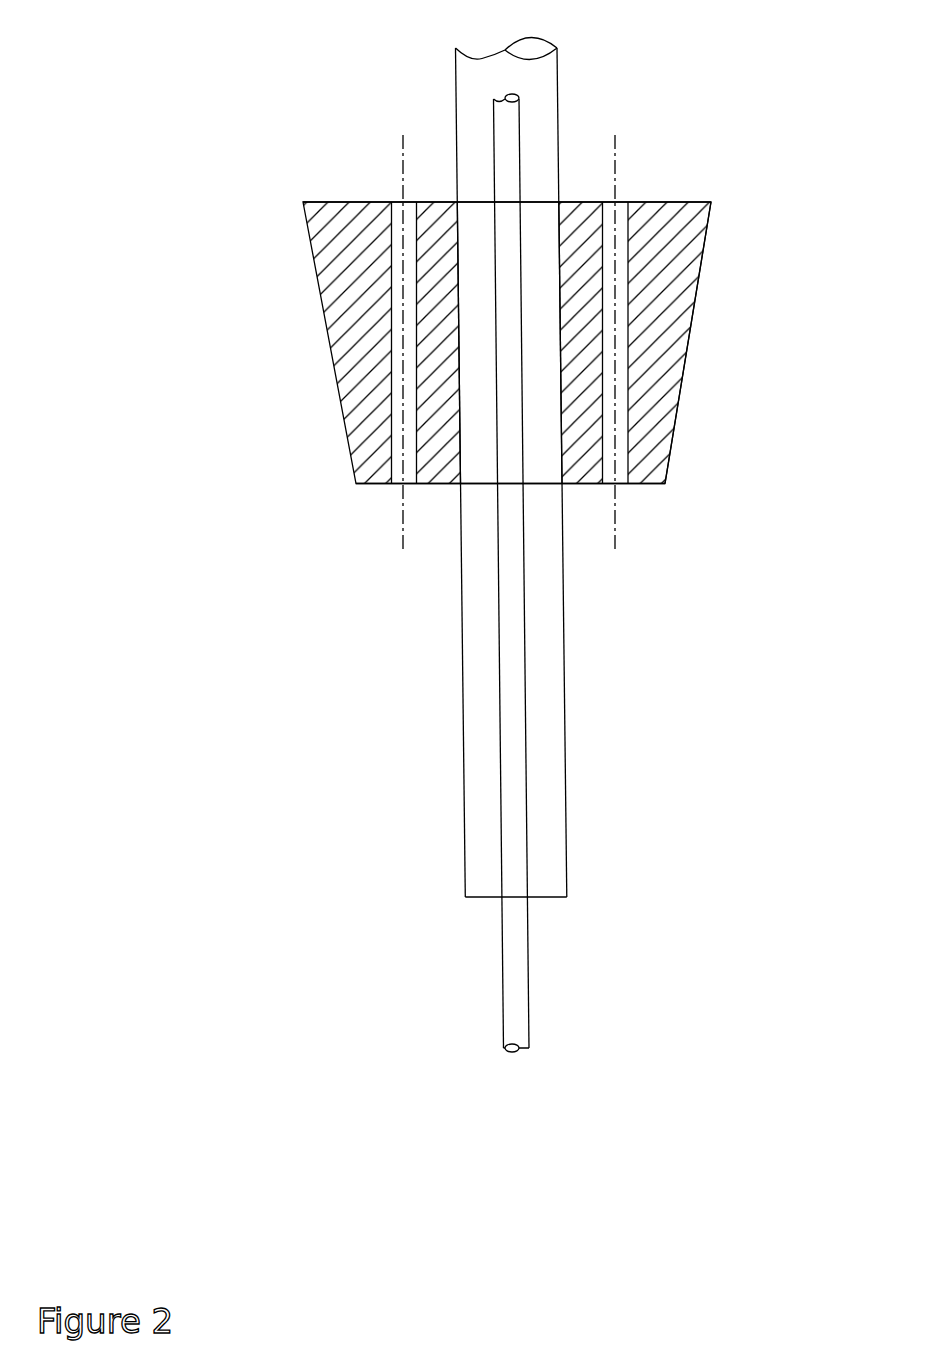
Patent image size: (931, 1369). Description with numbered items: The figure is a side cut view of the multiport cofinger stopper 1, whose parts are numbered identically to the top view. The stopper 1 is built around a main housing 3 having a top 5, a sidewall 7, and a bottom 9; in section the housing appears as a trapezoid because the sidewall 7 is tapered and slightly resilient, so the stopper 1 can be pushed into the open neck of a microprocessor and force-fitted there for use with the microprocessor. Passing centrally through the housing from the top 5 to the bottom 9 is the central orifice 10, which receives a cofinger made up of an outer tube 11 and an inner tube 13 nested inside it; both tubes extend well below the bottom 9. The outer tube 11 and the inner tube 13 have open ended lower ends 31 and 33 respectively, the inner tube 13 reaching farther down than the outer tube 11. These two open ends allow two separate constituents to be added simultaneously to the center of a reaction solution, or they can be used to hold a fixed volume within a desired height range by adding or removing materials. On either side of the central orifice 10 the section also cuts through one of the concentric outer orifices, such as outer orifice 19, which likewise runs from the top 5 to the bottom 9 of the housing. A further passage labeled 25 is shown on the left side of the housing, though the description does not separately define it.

The multiport cofinger stopper 1 is at (387, 102).
The main housing 3 is at (705, 247).
The top 5 is at (640, 201).
The sidewall 7 is at (693, 322).
The bottom 9 is at (638, 484).
The central orifice 10 is at (560, 200).
The outer tube 11 is at (573, 494).
The inner tube 13 is at (478, 600).
The outer orifice 19 is at (618, 388).
The first passage 25 is at (403, 433).
The open ended lower end of outer tube 31 is at (547, 900).
The open ended lower end of inner tube 33 is at (503, 1050).